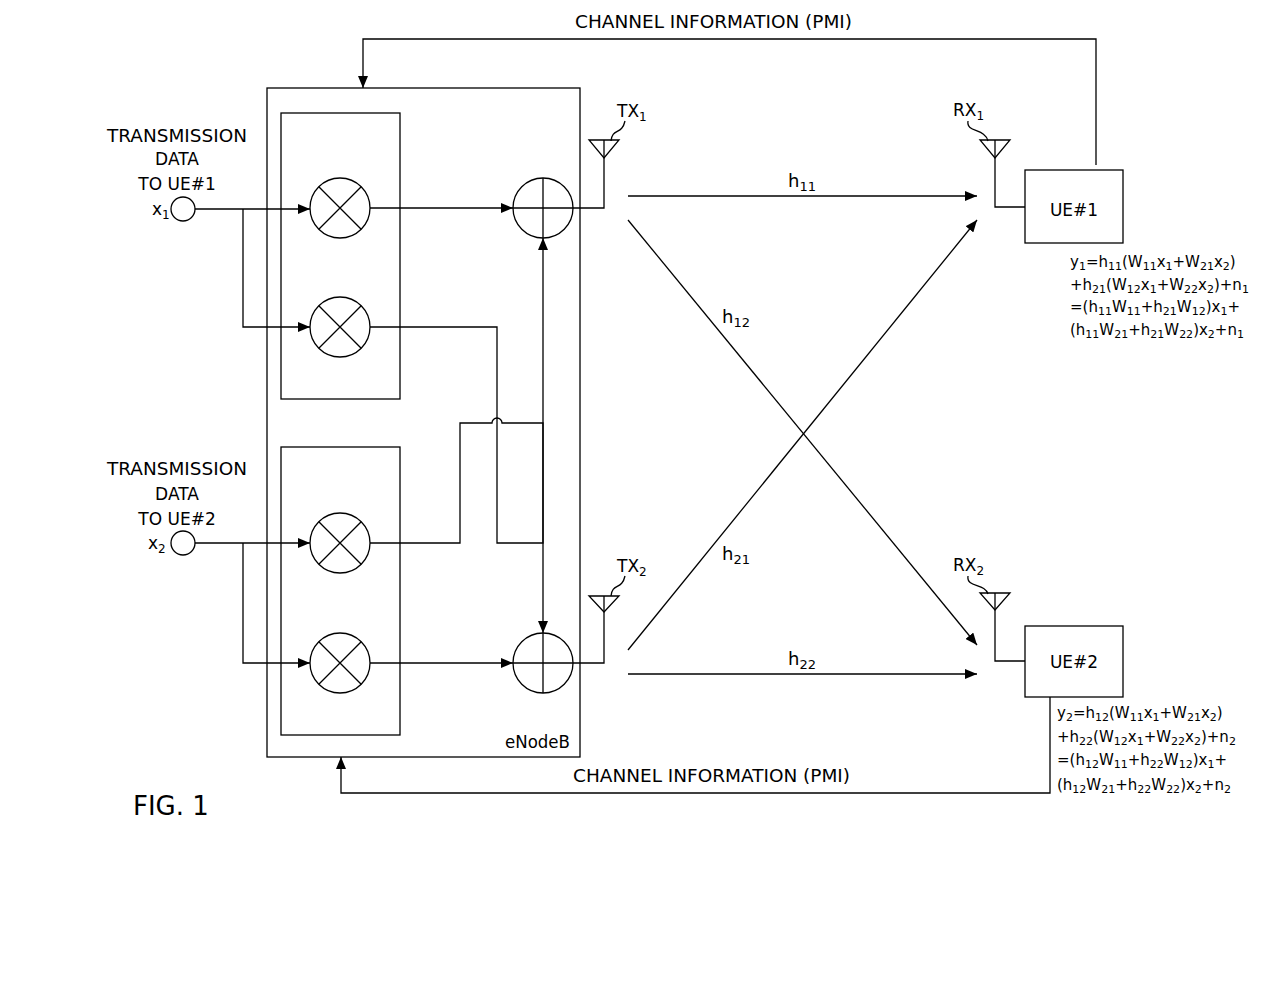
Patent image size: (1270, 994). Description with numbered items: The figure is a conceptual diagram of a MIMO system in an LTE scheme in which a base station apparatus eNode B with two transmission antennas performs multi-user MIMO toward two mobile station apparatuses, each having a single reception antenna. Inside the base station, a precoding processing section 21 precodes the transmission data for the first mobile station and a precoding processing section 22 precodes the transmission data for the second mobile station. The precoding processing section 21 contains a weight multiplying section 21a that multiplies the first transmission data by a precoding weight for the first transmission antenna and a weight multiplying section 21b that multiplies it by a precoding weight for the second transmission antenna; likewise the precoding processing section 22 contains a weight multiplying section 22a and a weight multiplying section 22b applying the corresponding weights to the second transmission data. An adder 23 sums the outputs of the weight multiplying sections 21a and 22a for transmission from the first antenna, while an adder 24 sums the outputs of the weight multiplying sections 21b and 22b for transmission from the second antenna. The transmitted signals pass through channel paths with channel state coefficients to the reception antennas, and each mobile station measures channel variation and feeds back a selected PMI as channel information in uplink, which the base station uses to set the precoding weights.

The precoding processing section 21 is at (400, 249).
The weight multiplying section 21a is at (357, 182).
The weight multiplying section 21b is at (357, 302).
The precoding processing section 22 is at (400, 608).
The weight multiplying section 22a is at (357, 520).
The weight multiplying section 22b is at (357, 638).
The adder 23 is at (522, 183).
The adder 24 is at (522, 638).